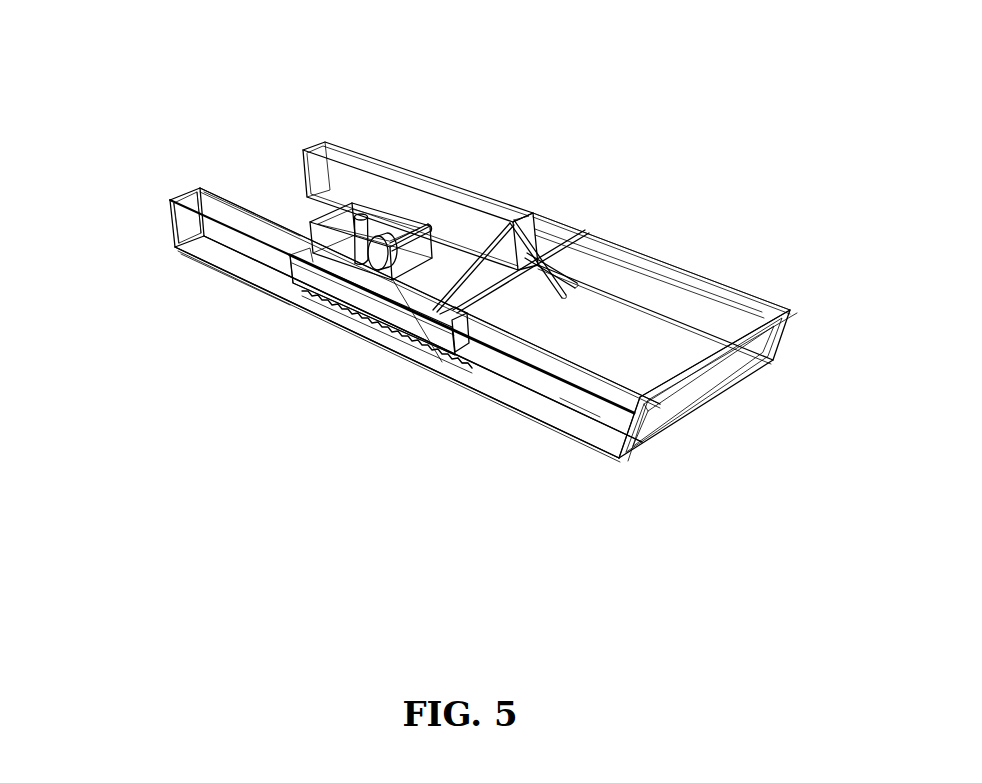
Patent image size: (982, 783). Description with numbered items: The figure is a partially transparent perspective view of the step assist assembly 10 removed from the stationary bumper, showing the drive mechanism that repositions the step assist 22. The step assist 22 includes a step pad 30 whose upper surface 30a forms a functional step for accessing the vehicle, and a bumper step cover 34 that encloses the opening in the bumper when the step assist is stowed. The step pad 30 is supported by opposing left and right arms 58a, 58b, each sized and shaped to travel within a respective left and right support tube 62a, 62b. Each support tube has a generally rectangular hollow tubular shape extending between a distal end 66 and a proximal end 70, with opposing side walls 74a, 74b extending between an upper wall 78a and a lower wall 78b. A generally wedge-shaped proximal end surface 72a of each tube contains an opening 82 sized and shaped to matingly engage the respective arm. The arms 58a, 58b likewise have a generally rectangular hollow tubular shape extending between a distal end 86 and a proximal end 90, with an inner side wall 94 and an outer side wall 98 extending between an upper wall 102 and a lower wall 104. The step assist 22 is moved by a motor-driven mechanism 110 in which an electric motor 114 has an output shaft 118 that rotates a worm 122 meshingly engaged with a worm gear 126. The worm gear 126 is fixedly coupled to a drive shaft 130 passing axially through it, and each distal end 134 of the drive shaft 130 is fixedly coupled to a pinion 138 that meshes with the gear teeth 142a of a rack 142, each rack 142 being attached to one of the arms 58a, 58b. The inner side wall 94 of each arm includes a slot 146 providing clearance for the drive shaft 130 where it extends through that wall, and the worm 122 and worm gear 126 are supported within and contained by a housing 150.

The step assist assembly 10 is at (633, 190).
The step assist 22 is at (633, 468).
The step pad 30 is at (630, 342).
The upper surface 30a is at (638, 340).
The bumper step cover 34 is at (718, 377).
The left arm 58a is at (527, 412).
The right arm 58b is at (547, 233).
The left support tube 62a is at (213, 263).
The right support tube 62b is at (440, 190).
The distal end 66 is at (328, 145).
The proximal end 70 is at (560, 295).
The proximal end surface 72a is at (525, 220).
The side wall 74a is at (187, 227).
The side wall 74b is at (193, 205).
The upper wall 78a is at (222, 212).
The lower wall 78b is at (251, 266).
The opening 82 is at (430, 362).
The distal end 86 is at (650, 400).
The proximal end 90 is at (340, 250).
The inner side wall 94 is at (697, 312).
The outer side wall 98 is at (594, 366).
The upper wall 102 is at (716, 295).
The lower wall 104 is at (597, 432).
The motor-driven mechanism 110 is at (344, 248).
The electric motor 114 is at (357, 317).
The output shaft 118 is at (346, 232).
The worm 122 is at (346, 232).
The worm gear 126 is at (378, 203).
The drive shaft 130 is at (392, 256).
The distal end 134 is at (297, 293).
The pinion 138 is at (327, 290).
The rack 142 is at (423, 323).
The gear teeth 142a is at (433, 360).
The slot 146 is at (552, 280).
The housing 150 is at (307, 270).